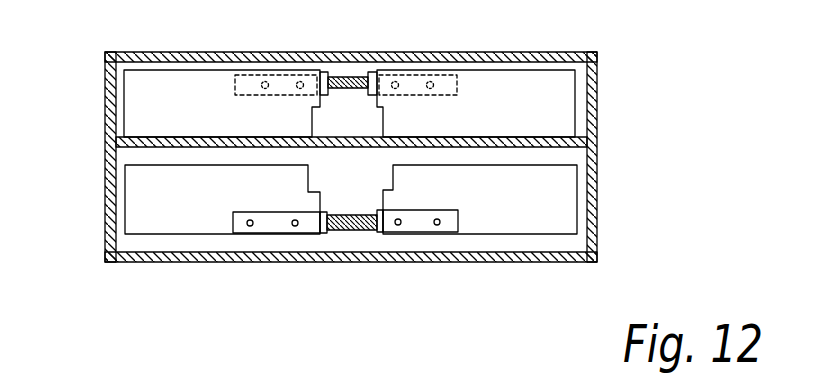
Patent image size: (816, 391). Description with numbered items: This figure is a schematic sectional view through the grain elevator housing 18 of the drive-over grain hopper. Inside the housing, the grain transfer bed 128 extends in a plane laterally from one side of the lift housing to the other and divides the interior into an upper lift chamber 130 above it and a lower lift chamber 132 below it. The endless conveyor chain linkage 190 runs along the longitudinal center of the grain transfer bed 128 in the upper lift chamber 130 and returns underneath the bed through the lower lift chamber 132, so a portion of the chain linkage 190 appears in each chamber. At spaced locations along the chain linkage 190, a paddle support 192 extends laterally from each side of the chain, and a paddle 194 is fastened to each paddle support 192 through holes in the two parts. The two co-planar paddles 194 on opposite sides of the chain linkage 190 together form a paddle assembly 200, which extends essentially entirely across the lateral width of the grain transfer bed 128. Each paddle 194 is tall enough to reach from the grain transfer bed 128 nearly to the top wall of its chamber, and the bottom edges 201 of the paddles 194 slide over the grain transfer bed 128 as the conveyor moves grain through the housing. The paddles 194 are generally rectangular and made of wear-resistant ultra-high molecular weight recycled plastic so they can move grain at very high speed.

The grain elevator housing 18 is at (331, 156).
The grain transfer bed 128 is at (535, 147).
The upper lift chamber 130 is at (520, 67).
The lower lift chamber 132 is at (537, 243).
The endless conveyor chain linkage 190 is at (347, 77).
The paddle support 192 is at (272, 74).
The paddle 194 is at (186, 113).
The paddle assembly 200 is at (303, 156).
The bottom edge 201 is at (213, 137).